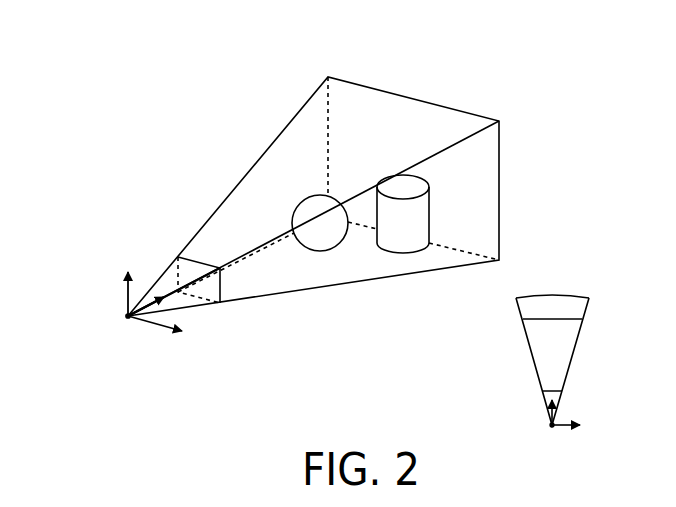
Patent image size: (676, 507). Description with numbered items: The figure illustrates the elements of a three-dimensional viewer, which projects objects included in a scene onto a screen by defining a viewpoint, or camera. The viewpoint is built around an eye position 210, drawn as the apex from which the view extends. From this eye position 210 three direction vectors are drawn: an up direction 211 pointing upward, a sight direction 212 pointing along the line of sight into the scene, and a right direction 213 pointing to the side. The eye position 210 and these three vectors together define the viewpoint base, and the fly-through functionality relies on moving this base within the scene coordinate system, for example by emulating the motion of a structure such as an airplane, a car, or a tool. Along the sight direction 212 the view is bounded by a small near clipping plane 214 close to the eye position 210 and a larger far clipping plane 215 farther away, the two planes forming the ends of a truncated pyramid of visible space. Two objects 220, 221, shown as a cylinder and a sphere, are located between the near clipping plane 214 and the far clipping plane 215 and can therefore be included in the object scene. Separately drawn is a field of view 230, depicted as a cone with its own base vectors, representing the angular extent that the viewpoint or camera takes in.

The eye position 210 is at (128, 317).
The up direction 211 is at (127, 290).
The sight direction 212 is at (187, 308).
The right direction 213 is at (175, 334).
The near clipping plane 214 is at (178, 257).
The far clipping plane 215 is at (403, 112).
The object 220 is at (430, 208).
The object 221 is at (306, 196).
The field of view 230 is at (557, 298).